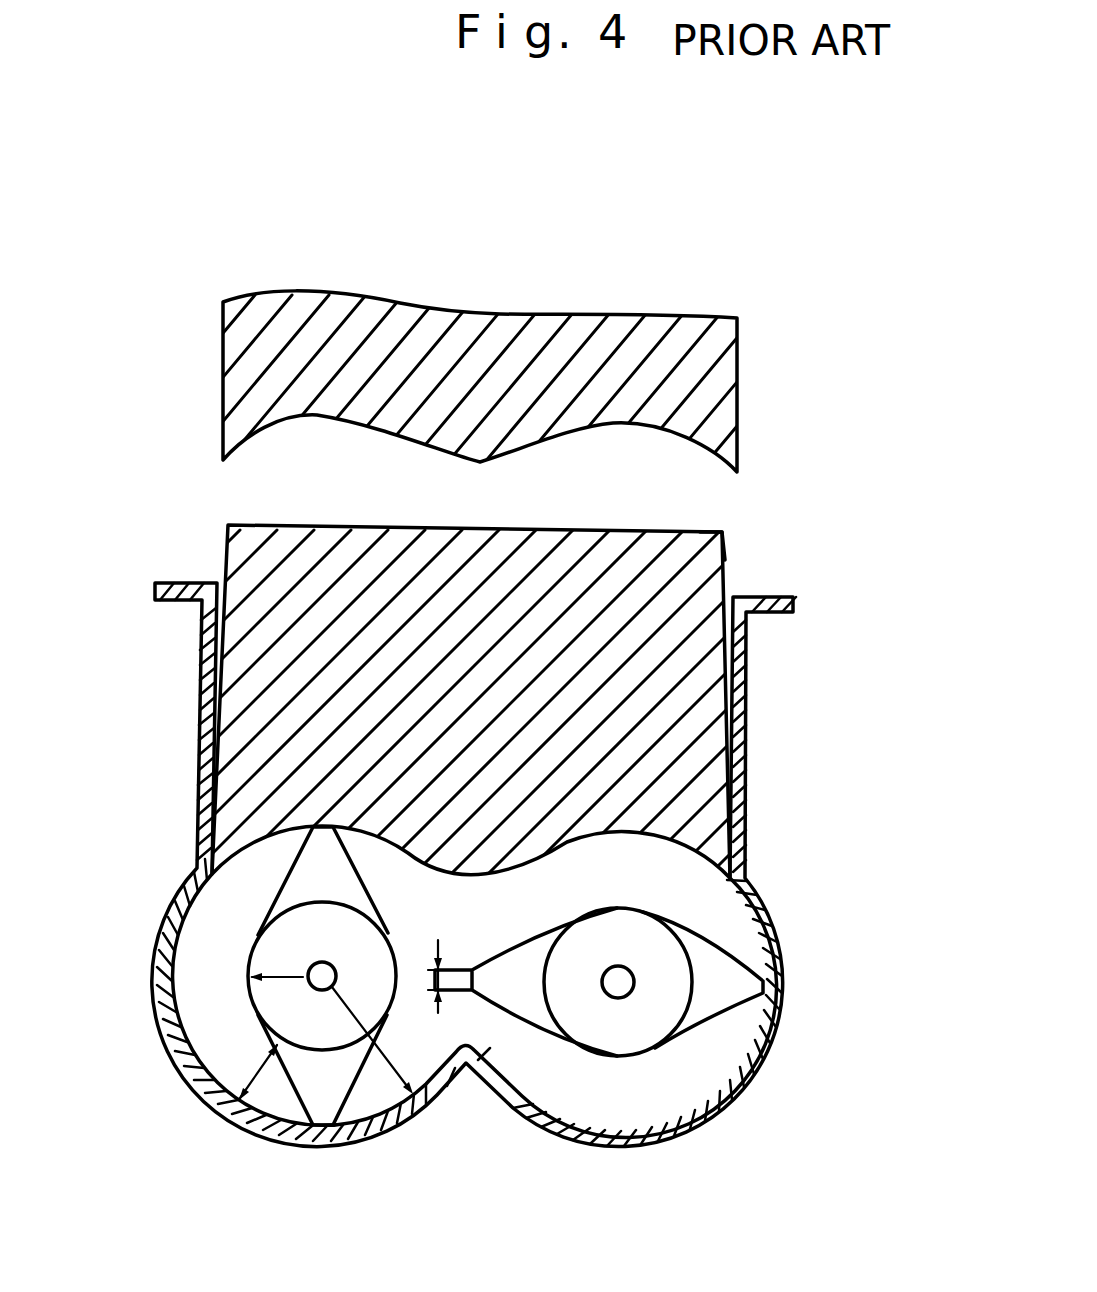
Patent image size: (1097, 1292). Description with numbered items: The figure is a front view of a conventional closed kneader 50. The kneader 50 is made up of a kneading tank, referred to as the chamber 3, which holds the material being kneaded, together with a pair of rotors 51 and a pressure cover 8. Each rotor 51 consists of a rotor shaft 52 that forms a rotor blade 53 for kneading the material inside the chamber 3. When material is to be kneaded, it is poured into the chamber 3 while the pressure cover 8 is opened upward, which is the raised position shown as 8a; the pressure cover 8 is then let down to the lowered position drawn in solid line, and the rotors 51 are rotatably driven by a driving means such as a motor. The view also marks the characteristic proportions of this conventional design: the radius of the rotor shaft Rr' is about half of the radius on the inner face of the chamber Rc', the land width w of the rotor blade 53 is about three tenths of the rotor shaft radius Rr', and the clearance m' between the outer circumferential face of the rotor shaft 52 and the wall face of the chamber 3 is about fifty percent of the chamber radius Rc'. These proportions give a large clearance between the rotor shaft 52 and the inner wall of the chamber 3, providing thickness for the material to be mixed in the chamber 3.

The pressure cover (opened position) 8a is at (668, 330).
The pressure cover 8 is at (497, 598).
The closed kneader 50 is at (725, 531).
The chamber 3 is at (795, 596).
The rotor 51 is at (712, 940).
The rotor shaft 52 is at (643, 1027).
The rotor blade 53 is at (520, 995).
The radius of the rotor shaft Rr' is at (224, 949).
The clearance m' is at (241, 976).
The radius on the inner face of the chamber Rc' is at (353, 1118).
The land width of the rotor blade w is at (418, 978).